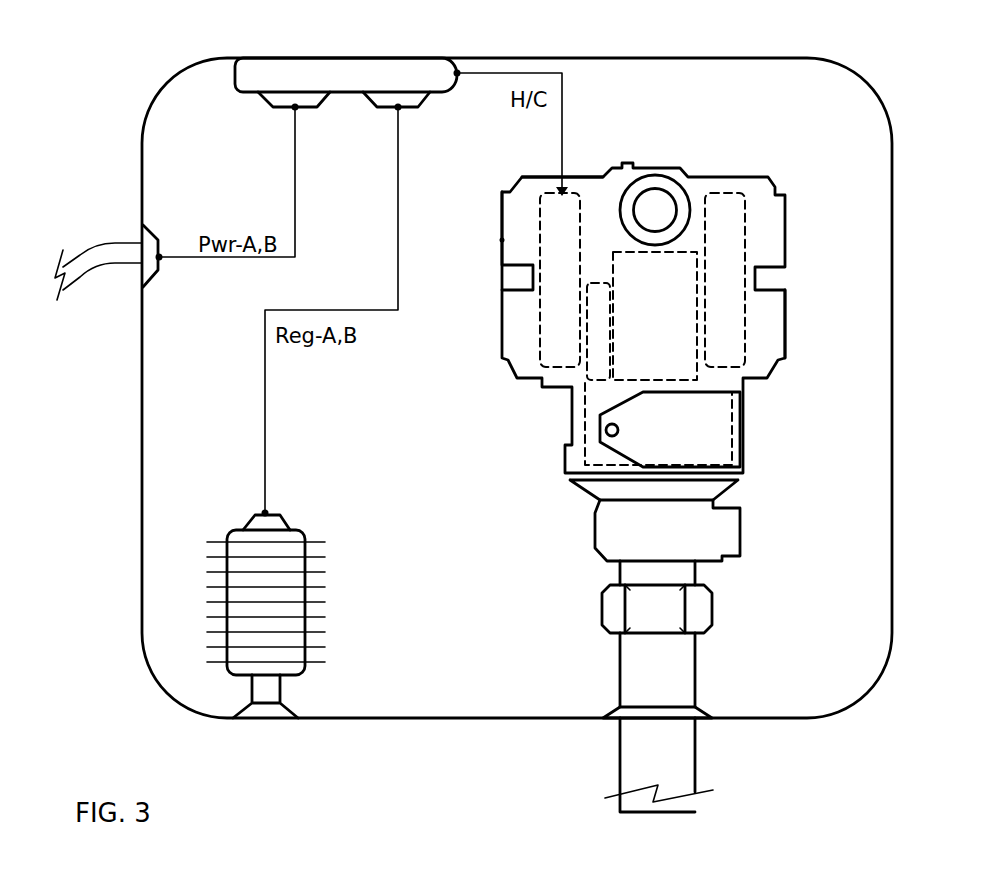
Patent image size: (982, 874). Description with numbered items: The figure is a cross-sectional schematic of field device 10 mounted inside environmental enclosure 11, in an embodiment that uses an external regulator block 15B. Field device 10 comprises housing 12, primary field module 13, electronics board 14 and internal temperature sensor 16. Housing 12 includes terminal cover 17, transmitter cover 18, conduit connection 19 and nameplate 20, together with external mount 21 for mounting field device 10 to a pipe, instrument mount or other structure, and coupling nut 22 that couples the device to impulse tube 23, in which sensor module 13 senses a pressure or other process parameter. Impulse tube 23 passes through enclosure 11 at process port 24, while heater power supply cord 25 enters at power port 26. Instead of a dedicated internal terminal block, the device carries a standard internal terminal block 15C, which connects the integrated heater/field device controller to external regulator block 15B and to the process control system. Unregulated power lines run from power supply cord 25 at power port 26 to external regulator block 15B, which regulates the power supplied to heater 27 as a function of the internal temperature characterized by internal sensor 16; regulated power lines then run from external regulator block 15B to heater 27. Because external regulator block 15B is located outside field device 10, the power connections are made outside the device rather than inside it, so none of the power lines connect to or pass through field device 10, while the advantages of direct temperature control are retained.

The field device 10 is at (797, 163).
The environmental enclosure 11 is at (150, 74).
The housing 12 is at (540, 175).
The primary field module 13 is at (585, 422).
The electronics board 14 is at (747, 233).
The external regulator block 15B is at (427, 62).
The standard internal terminal block 15C is at (540, 205).
The internal temperature sensor 16 is at (598, 282).
The terminal cover 17 is at (509, 240).
The transmitter cover 18 is at (792, 325).
The conduit connection 19 is at (650, 178).
The nameplate 20 is at (747, 425).
The external mount 21 is at (742, 525).
The coupling nut 22 is at (712, 607).
The impulse tube 23 is at (695, 687).
The process port 24 is at (612, 708).
The heater power supply cord 25 is at (110, 245).
The power port 26 is at (152, 235).
The heater 27 is at (235, 518).